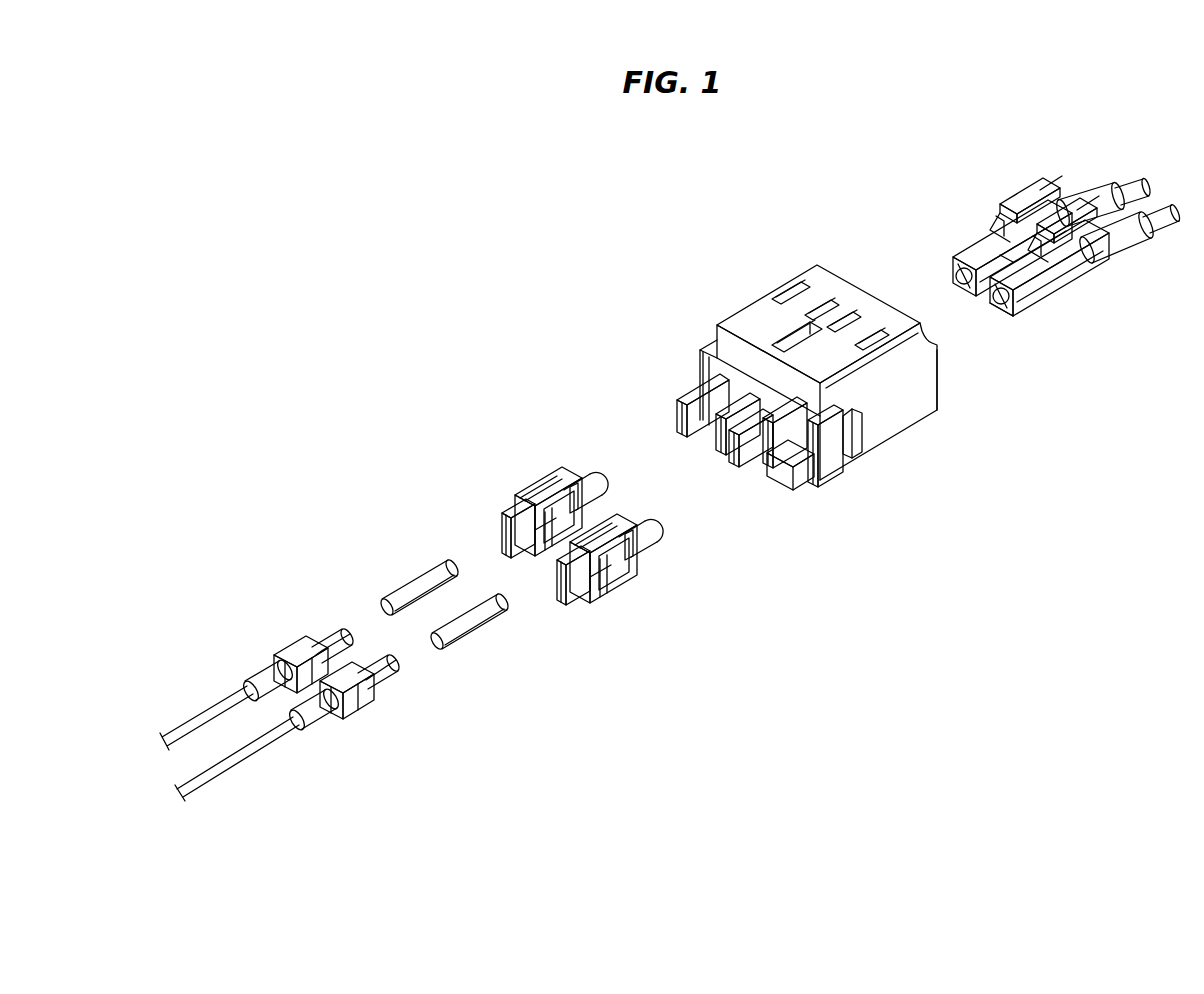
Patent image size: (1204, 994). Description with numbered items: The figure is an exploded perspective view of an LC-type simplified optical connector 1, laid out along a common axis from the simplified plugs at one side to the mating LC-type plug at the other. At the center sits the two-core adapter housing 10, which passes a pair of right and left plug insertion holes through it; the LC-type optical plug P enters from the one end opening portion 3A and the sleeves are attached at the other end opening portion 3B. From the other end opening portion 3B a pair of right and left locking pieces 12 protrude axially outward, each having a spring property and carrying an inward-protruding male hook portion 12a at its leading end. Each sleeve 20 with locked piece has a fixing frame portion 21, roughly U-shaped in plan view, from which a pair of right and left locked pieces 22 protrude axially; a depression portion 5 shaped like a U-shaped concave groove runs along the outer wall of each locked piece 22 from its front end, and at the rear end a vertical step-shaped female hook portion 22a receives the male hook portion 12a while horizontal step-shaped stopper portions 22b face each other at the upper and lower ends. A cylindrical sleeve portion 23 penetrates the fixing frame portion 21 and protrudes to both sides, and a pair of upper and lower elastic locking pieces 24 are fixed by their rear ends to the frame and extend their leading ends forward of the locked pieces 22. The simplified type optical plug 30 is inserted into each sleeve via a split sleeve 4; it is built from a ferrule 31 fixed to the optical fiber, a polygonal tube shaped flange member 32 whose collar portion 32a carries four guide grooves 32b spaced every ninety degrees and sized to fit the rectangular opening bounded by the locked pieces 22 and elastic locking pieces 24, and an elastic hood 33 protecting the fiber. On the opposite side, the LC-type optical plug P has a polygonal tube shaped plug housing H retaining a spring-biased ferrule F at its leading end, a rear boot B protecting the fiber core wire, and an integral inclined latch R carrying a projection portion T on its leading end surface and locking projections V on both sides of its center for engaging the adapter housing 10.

The LC-type simplified optical connector 1 is at (486, 347).
The adapter housing 10 is at (824, 292).
The one end opening portion 3A is at (938, 388).
The other end opening portion 3B is at (748, 402).
The locking piece 12 is at (680, 400).
The male hook portion 12a is at (686, 421).
The sleeve with locked piece 20 is at (516, 472).
The fixing frame portion 21 is at (566, 483).
The locked piece 22 is at (522, 502).
The female hook portion 22a is at (515, 548).
The stopper portion 22b is at (577, 490).
The cylindrical sleeve portion 23 is at (603, 474).
The elastic locking piece 24 is at (503, 541).
The depression portion 5 is at (546, 550).
The split sleeve 4 is at (418, 580).
The simplified type optical plug 30 is at (231, 613).
The ferrule 31 is at (330, 640).
The flange member 32 is at (311, 583).
The collar portion 32a is at (292, 646).
The guide groove 32b is at (305, 640).
The hood 33 is at (260, 672).
The LC-type optical plug P is at (989, 203).
The plug housing H is at (955, 270).
The latch R is at (1030, 203).
The projection portion T is at (1082, 200).
The boot B is at (1100, 198).
The locking projection V is at (1003, 233).
The ferrule F is at (992, 307).